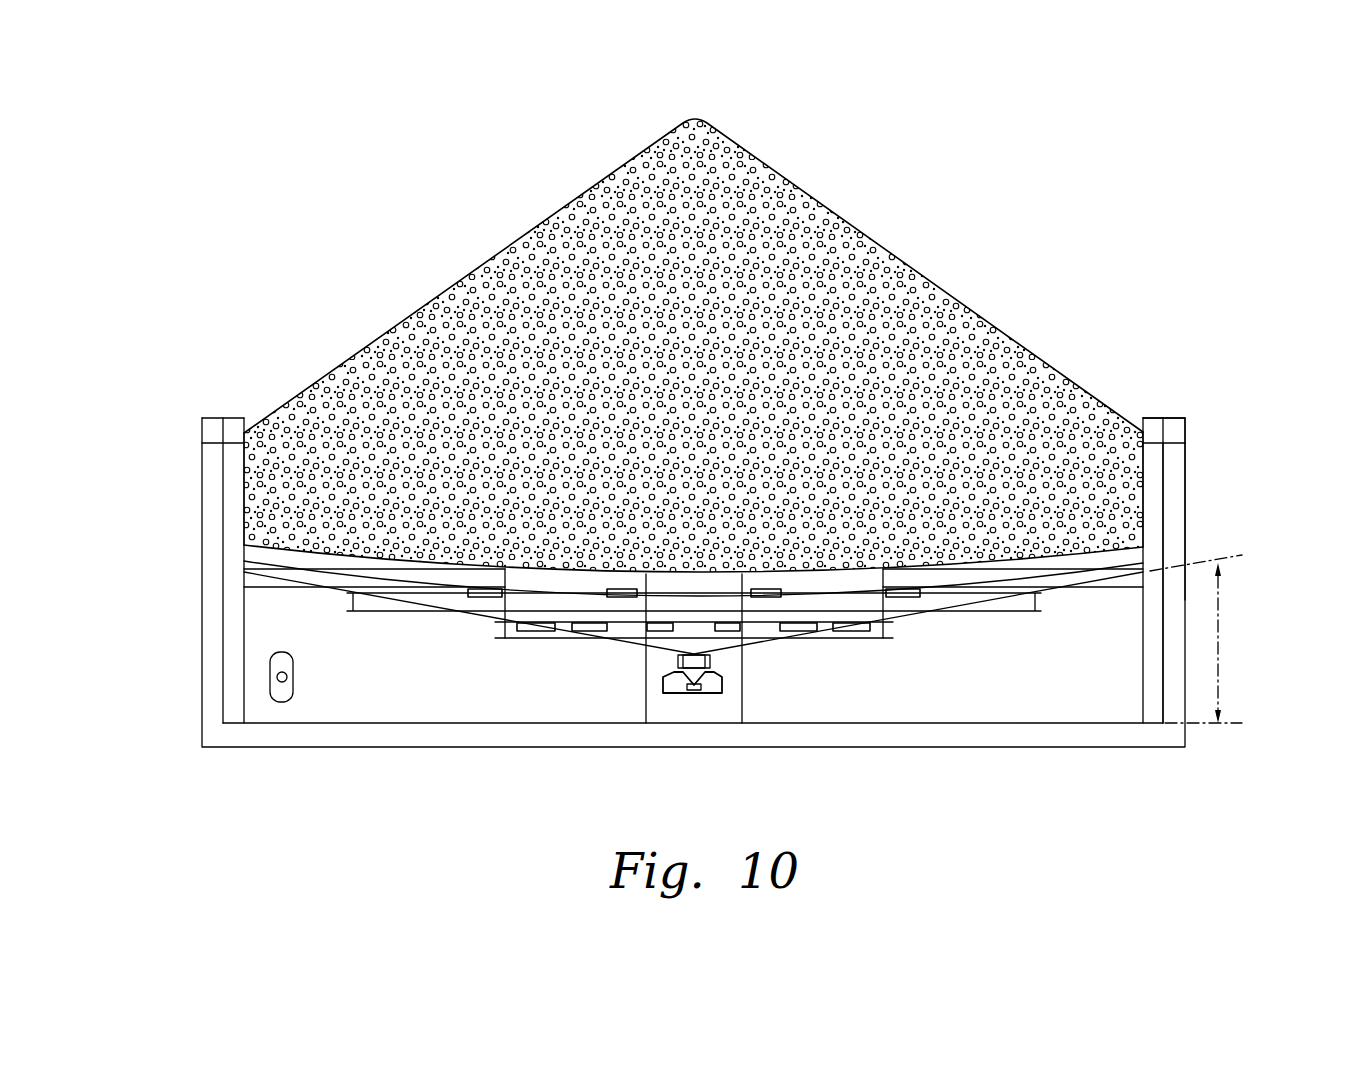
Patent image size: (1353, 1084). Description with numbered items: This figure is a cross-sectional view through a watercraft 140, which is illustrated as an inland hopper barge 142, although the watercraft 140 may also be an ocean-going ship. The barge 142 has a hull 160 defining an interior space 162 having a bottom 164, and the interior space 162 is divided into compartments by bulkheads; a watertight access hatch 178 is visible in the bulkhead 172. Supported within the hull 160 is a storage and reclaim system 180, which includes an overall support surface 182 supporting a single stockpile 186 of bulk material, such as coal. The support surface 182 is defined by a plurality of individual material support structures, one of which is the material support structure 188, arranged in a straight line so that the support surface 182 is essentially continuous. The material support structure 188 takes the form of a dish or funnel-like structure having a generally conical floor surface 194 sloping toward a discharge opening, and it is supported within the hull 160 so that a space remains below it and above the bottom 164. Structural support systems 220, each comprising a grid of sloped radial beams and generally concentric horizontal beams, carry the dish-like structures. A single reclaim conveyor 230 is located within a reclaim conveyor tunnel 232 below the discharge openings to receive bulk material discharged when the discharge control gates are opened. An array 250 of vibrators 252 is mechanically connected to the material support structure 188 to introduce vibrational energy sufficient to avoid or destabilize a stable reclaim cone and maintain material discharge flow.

The watercraft 140 is at (1096, 140).
The inland hopper barge 142 is at (1208, 389).
The hull 160 is at (202, 643).
The interior space 162 is at (447, 672).
The bottom 164 is at (452, 723).
The bulkhead 172 is at (1012, 690).
The watertight access hatch 178 is at (293, 695).
The storage and reclaim system 180 is at (1237, 475).
The overall support surface 182 is at (978, 558).
The stockpile 186 is at (763, 252).
The material support structure 188 is at (272, 547).
The conical floor surface 194 is at (1070, 550).
The structural support system 220 is at (1049, 645).
The reclaim conveyor 230 is at (725, 690).
The reclaim conveyor tunnel 232 is at (672, 723).
The array of vibrators 250 is at (573, 690).
The vibrator 252 is at (903, 598).